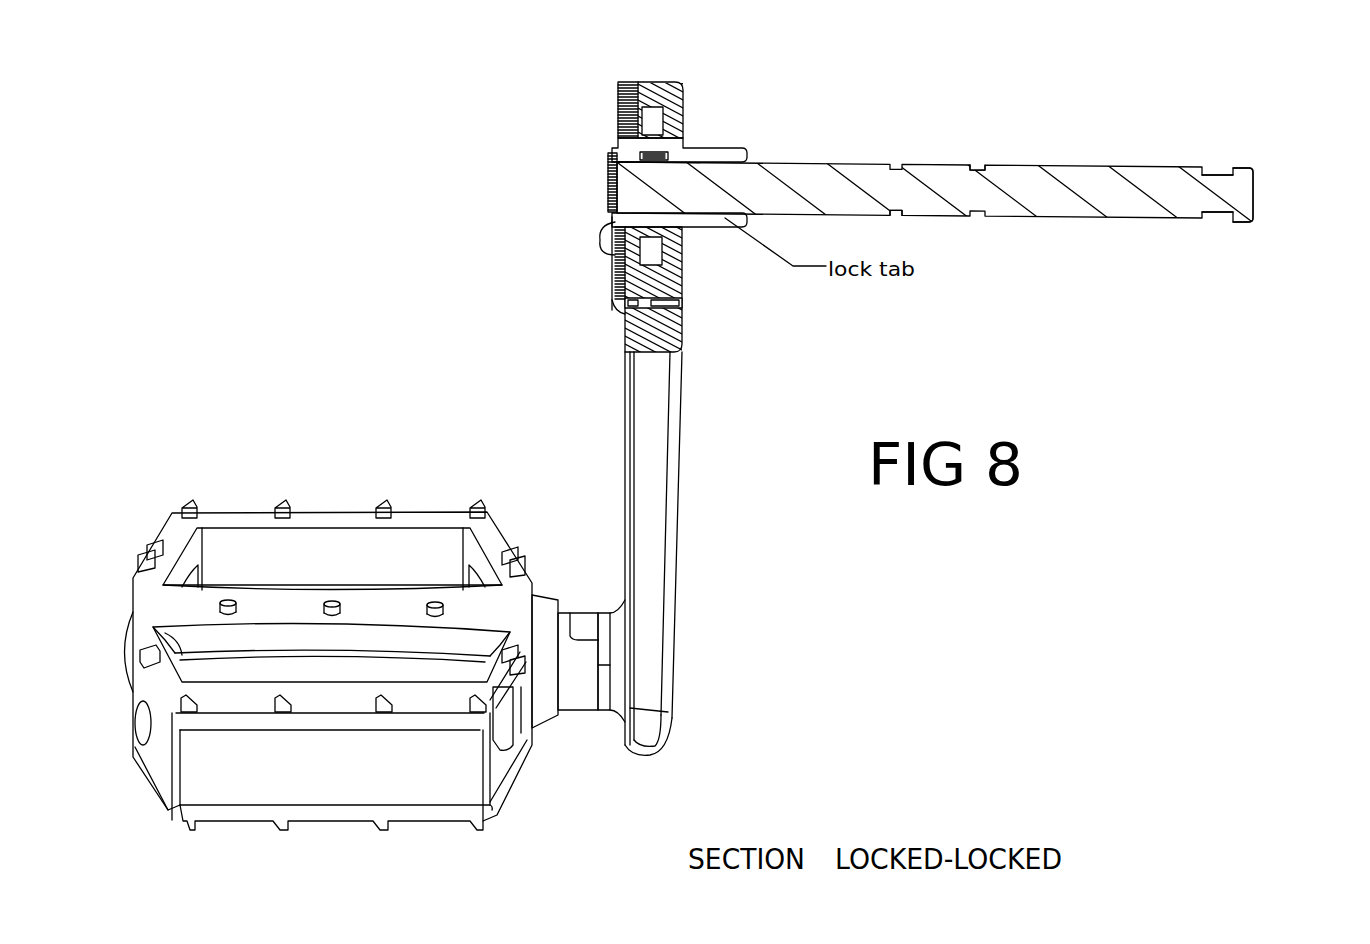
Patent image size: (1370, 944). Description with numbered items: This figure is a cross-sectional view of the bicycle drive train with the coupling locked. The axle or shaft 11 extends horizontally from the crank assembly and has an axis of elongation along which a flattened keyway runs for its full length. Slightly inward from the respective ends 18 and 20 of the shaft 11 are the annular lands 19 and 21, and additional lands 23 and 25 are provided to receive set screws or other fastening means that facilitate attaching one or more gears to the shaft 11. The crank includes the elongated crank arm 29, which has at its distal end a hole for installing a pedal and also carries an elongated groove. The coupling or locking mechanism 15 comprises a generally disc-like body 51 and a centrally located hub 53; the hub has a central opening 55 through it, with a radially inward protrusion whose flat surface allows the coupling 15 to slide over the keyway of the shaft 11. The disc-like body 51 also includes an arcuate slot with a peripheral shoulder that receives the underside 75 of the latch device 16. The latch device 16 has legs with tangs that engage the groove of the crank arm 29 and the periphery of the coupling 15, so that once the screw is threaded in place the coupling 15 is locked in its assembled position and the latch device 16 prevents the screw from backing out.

The axle or shaft 11 is at (933, 176).
The coupling or locking mechanism 15 is at (663, 96).
The latch device 16 is at (612, 248).
The end of the shaft 18 is at (607, 182).
The annular land 19 is at (660, 215).
The end of the shaft 20 is at (1256, 191).
The annular land 21 is at (1213, 174).
The land 23 is at (897, 215).
The land 25 is at (975, 163).
The crank arm 29 is at (696, 456).
The disc-like body 51 is at (626, 82).
The hub 53 is at (650, 160).
The central opening 55 is at (665, 178).
The underside 75 is at (620, 290).